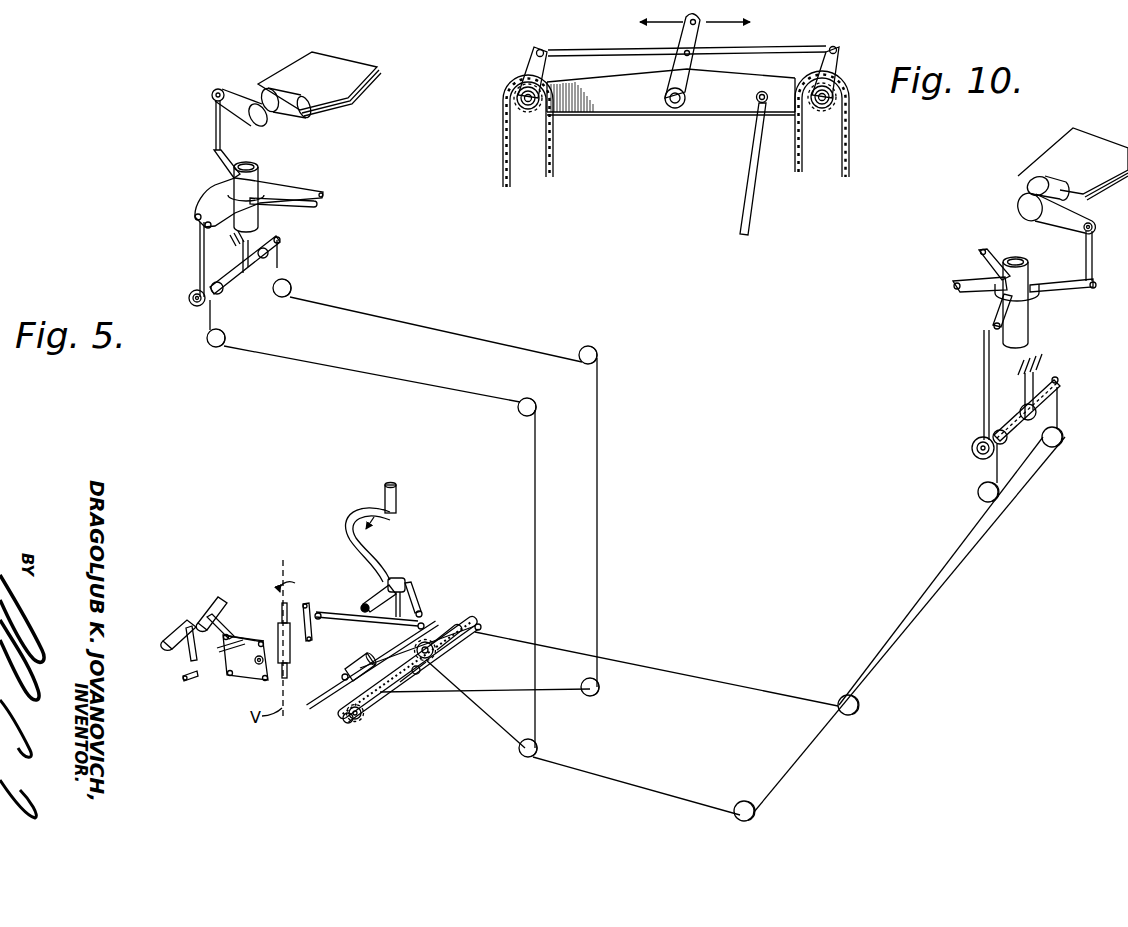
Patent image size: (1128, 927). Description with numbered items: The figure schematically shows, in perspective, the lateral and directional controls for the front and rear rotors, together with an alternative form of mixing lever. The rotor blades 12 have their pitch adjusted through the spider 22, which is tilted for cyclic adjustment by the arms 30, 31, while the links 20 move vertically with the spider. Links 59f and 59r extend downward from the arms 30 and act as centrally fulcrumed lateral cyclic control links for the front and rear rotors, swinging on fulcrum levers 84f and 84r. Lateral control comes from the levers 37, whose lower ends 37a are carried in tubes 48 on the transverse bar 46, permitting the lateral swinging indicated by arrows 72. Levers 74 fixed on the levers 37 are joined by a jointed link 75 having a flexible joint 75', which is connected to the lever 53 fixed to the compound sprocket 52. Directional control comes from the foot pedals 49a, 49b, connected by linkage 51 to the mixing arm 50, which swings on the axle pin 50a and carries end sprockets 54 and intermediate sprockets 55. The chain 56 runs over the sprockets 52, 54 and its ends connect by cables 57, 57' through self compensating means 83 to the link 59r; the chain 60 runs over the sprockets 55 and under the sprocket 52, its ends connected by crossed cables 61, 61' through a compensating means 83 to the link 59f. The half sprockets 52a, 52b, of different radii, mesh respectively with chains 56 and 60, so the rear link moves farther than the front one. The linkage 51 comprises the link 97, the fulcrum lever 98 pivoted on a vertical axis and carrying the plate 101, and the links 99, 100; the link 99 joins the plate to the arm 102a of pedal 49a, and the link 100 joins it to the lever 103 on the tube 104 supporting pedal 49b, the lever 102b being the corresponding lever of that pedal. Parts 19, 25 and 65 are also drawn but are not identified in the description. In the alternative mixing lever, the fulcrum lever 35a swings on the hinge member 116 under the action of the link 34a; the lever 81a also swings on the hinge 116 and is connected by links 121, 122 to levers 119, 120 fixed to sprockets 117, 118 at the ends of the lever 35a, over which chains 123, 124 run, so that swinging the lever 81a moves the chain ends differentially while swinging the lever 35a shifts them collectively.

In FIG. 5, the rotor blades 12 is at (334, 92).
In FIG. 5, the link 19 is at (236, 89).
In FIG. 5, the links 20 is at (215, 130).
In FIG. 5, the spider 22 is at (272, 181).
In FIG. 5, the direction arrow 25 is at (1054, 311).
In FIG. 5, the lateral control arm 30 is at (208, 200).
In FIG. 5, the arm 31 is at (296, 205).
In FIG. 5, the front lateral cyclic control link 59f is at (198, 259).
In FIG. 5, the front fulcrum lever 84f is at (222, 290).
In FIG. 5, the rear lateral cyclic control link 59r is at (982, 373).
In FIG. 5, the rear fulcrum lever 84r is at (971, 447).
In FIG. 5, the self compensating means 83 is at (272, 268).
In FIG. 5, the cable 61 is at (398, 528).
In FIG. 5, the cable 61' is at (436, 513).
In FIG. 5, the cable 57 is at (769, 571).
In FIG. 5, the cable 57' is at (799, 629).
In FIG. 5, the arrows 72 is at (436, 483).
In FIG. 5, the control levers 37 is at (397, 502).
In FIG. 5, the tubes 48 is at (393, 578).
In FIG. 5, the lower ends of levers 37a is at (409, 583).
In FIG. 5, the levers 74 is at (422, 597).
In FIG. 5, the rod 65 is at (380, 589).
In FIG. 5, the horizontal transverse bar 46 is at (360, 607).
In FIG. 5, the fulcrum lever 98 is at (305, 612).
In FIG. 5, the vertically elongated plate 101 is at (322, 613).
In FIG. 5, the link 97 is at (326, 622).
In FIG. 5, the linkage 51 is at (299, 653).
In FIG. 5, the link 99 is at (249, 632).
In FIG. 5, the link 100 is at (247, 680).
In FIG. 5, the downwardly extending lever 103 is at (222, 668).
In FIG. 5, the horizontal tube 104 is at (201, 682).
In FIG. 5, the upwardly extending arm 102a is at (226, 616).
In FIG. 5, the foot pedal 49a is at (204, 605).
In FIG. 5, the foot pedal 49b is at (176, 628).
In FIG. 5, the pedal lever 102b is at (186, 662).
In FIG. 5, the jointed link 75 is at (365, 665).
In FIG. 5, the flexible joint 75' is at (352, 660).
In FIG. 5, the lever 53 is at (342, 677).
In FIG. 5, the intermediate sprockets 55 is at (437, 656).
In FIG. 5, the chain 56 is at (345, 716).
In FIG. 5, the end sprockets 54 is at (470, 622).
In FIG. 5, the larger half sprocket 52a is at (375, 657).
In FIG. 5, the central compound sprocket 52 is at (388, 657).
In FIG. 5, the smaller half sprocket 52b is at (419, 686).
In FIG. 5, the axle pin 50a is at (440, 619).
In FIG. 5, the mixing arm 50 is at (464, 648).
In FIG. 5, the chain 60 is at (420, 670).
In FIG. 10, the link 122 is at (588, 54).
In FIG. 10, the link 121 is at (762, 50).
In FIG. 10, the lever 81a is at (697, 36).
In FIG. 10, the lever 120 is at (530, 62).
In FIG. 10, the lever 119 is at (849, 58).
In FIG. 10, the sprocket 118 is at (530, 122).
In FIG. 10, the sprocket 117 is at (820, 120).
In FIG. 10, the chain 124 is at (556, 155).
In FIG. 10, the chain 123 is at (853, 156).
In FIG. 10, the mixing lever 35a is at (720, 108).
In FIG. 10, the hinge member 116 is at (671, 109).
In FIG. 10, the link 34a is at (744, 198).